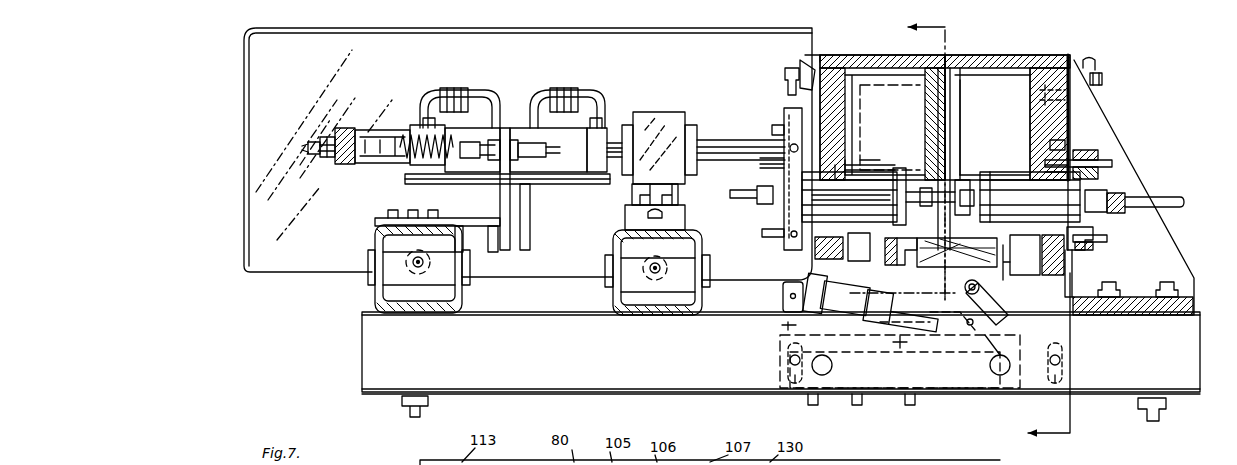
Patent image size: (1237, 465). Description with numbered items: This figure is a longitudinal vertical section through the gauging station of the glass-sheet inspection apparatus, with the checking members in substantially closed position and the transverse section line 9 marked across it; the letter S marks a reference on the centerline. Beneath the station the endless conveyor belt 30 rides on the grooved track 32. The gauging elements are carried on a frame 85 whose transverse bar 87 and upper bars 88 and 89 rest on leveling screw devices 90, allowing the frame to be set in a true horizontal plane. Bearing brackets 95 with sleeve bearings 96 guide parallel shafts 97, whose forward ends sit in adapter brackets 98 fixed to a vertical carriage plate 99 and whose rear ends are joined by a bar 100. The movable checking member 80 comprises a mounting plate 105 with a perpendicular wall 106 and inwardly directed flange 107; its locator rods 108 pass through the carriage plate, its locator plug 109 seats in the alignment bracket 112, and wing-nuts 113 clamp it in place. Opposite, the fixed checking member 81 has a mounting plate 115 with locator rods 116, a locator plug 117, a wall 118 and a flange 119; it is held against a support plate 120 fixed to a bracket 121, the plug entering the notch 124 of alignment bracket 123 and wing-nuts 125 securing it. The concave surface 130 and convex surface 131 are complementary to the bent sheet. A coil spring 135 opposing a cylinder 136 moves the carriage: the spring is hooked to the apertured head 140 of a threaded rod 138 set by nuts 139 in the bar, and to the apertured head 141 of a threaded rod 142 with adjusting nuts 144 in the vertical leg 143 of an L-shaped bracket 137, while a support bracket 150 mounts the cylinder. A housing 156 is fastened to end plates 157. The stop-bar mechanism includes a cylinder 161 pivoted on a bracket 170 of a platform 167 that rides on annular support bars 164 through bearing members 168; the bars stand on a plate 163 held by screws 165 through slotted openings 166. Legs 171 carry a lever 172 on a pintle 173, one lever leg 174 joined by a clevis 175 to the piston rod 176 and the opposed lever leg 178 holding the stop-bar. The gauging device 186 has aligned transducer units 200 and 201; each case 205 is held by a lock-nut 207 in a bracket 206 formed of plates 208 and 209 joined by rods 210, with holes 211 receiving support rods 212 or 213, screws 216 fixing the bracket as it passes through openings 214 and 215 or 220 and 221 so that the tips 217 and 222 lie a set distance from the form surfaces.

The section line 9- 9 is at (1021, 234).
The endless conveyor belt 30 is at (892, 266).
The grooved track 32 is at (912, 268).
The movable checking member 80 is at (897, 48).
The fixed checking member 81 is at (1021, 52).
The frame 85 is at (390, 336).
The horizontal bar 87 is at (380, 359).
The frame bar 88 is at (650, 316).
The frame bar 89 is at (375, 293).
The leveling screw device 90 is at (431, 409).
The bearing bracket 95 is at (665, 120).
The sleeve bearing 96 is at (630, 125).
The shaft 97 is at (615, 142).
The adapter bracket 98 is at (795, 117).
The carriage plate 99 is at (838, 60).
The bar 100 is at (343, 130).
The mounting plate 105 is at (845, 97).
The wall 106 is at (875, 56).
The flange 107 is at (932, 108).
The threaded locator rod 108 is at (802, 60).
The locator plug 109 is at (812, 272).
The alignment bracket 112 is at (815, 254).
The wing-nut 113 is at (806, 66).
The mounting plate 115 is at (1042, 105).
The threaded locator rod 116 is at (1103, 80).
The locator plug 117 is at (1067, 268).
The wall 118 is at (993, 56).
The flange 119 is at (952, 96).
The support plate 120 is at (1098, 108).
The bracket 121 is at (1150, 305).
The alignment bracket 123 is at (1070, 252).
The notch 124 is at (1047, 263).
The wing-nut 125 is at (1092, 64).
The surface 130 is at (940, 64).
The surface 131 is at (960, 76).
The coil spring 135 is at (420, 124).
The cylinder 136 is at (548, 125).
The L-shaped bracket 137 is at (475, 227).
The threaded rod 138 is at (310, 144).
The nut 139 is at (342, 166).
The apertured head 140 is at (400, 165).
The apertured head 141 is at (470, 140).
The threaded rod 142 is at (541, 150).
The vertical leg 143 is at (511, 200).
The adjusting nut 144 is at (512, 138).
The support bracket 150 is at (540, 185).
The housing 156 is at (252, 201).
The plate 157 is at (440, 262).
The cylinder 161 is at (840, 300).
The plate 163 is at (785, 334).
The annular support bar 164 is at (792, 394).
The screw 165 is at (788, 353).
The slotted opening 166 is at (790, 373).
The platform 167 is at (905, 324).
The bearing member 168 is at (830, 394).
The bracket 170 is at (783, 306).
The leg 171 is at (990, 314).
The lever 172 is at (1022, 256).
The pintle 173 is at (965, 286).
The lever leg 174 is at (966, 305).
The clevis 175 is at (950, 322).
The piston rod 176 is at (900, 318).
The lever leg 178 is at (1005, 266).
The gauging device 186 is at (868, 165).
The linear displacement transducer unit 200 is at (876, 168).
The linear displacement transducer unit 201 is at (1013, 170).
The case 205 is at (882, 186).
The bracket 206 is at (1100, 180).
The lock-nut 207 is at (900, 190).
The plate 208 is at (1098, 158).
The plate 209 is at (890, 210).
The rod 210 is at (808, 178).
The hole 211 is at (798, 140).
The support rod 212 is at (793, 142).
The support rod 213 is at (1100, 172).
The opening 214 is at (852, 162).
The opening 215 is at (842, 170).
The screw 216 is at (800, 157).
The tip 217 is at (932, 196).
The opening 220 is at (1056, 170).
The opening 221 is at (1062, 148).
The tip 222 is at (957, 200).
The centerline S is at (947, 137).